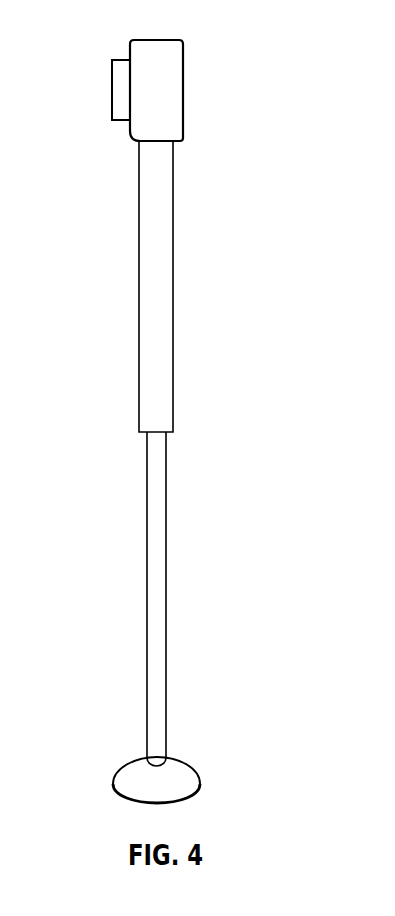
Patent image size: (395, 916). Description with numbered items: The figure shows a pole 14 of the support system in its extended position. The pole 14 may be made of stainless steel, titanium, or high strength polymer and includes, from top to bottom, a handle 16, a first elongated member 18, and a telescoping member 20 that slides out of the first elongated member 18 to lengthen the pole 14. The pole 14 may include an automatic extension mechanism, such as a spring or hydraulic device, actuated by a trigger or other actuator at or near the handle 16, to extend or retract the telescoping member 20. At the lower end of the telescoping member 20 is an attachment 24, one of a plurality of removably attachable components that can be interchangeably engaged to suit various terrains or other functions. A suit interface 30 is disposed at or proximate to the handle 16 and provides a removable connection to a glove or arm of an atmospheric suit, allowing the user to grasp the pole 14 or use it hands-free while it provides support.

The pole 14 is at (216, 43).
The handle 16 is at (168, 108).
The first elongated member 18 is at (175, 350).
The telescoping member 20 is at (157, 620).
The attachment 24 is at (185, 776).
The suit interface 30 is at (120, 89).